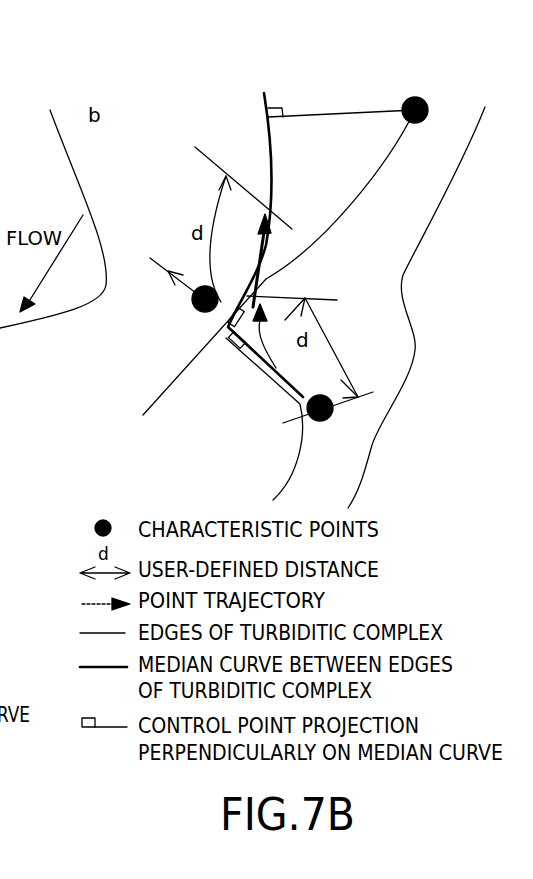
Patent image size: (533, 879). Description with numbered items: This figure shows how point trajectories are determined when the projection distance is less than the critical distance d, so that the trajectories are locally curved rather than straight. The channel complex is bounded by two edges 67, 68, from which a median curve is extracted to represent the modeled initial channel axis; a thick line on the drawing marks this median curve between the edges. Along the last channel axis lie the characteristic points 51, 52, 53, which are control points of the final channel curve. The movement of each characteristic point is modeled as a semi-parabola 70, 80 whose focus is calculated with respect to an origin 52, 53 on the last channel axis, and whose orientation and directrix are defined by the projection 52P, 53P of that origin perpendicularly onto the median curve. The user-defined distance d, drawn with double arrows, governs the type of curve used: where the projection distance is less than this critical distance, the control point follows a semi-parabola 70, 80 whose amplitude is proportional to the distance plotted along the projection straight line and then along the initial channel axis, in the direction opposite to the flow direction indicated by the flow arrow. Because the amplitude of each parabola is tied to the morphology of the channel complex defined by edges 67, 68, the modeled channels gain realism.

The channel axis characteristic point 51 is at (420, 99).
The channel axis characteristic point 52 is at (192, 301).
The channel axis characteristic point 53 is at (328, 421).
The projection of origin onto median curve 52P is at (210, 328).
The projection of origin onto median curve 53P is at (223, 357).
The edge of channel complex 67 is at (50, 318).
The edge of channel complex 68 is at (470, 182).
The semi-parabola 70 is at (258, 264).
The semi-parabola 80 is at (272, 362).